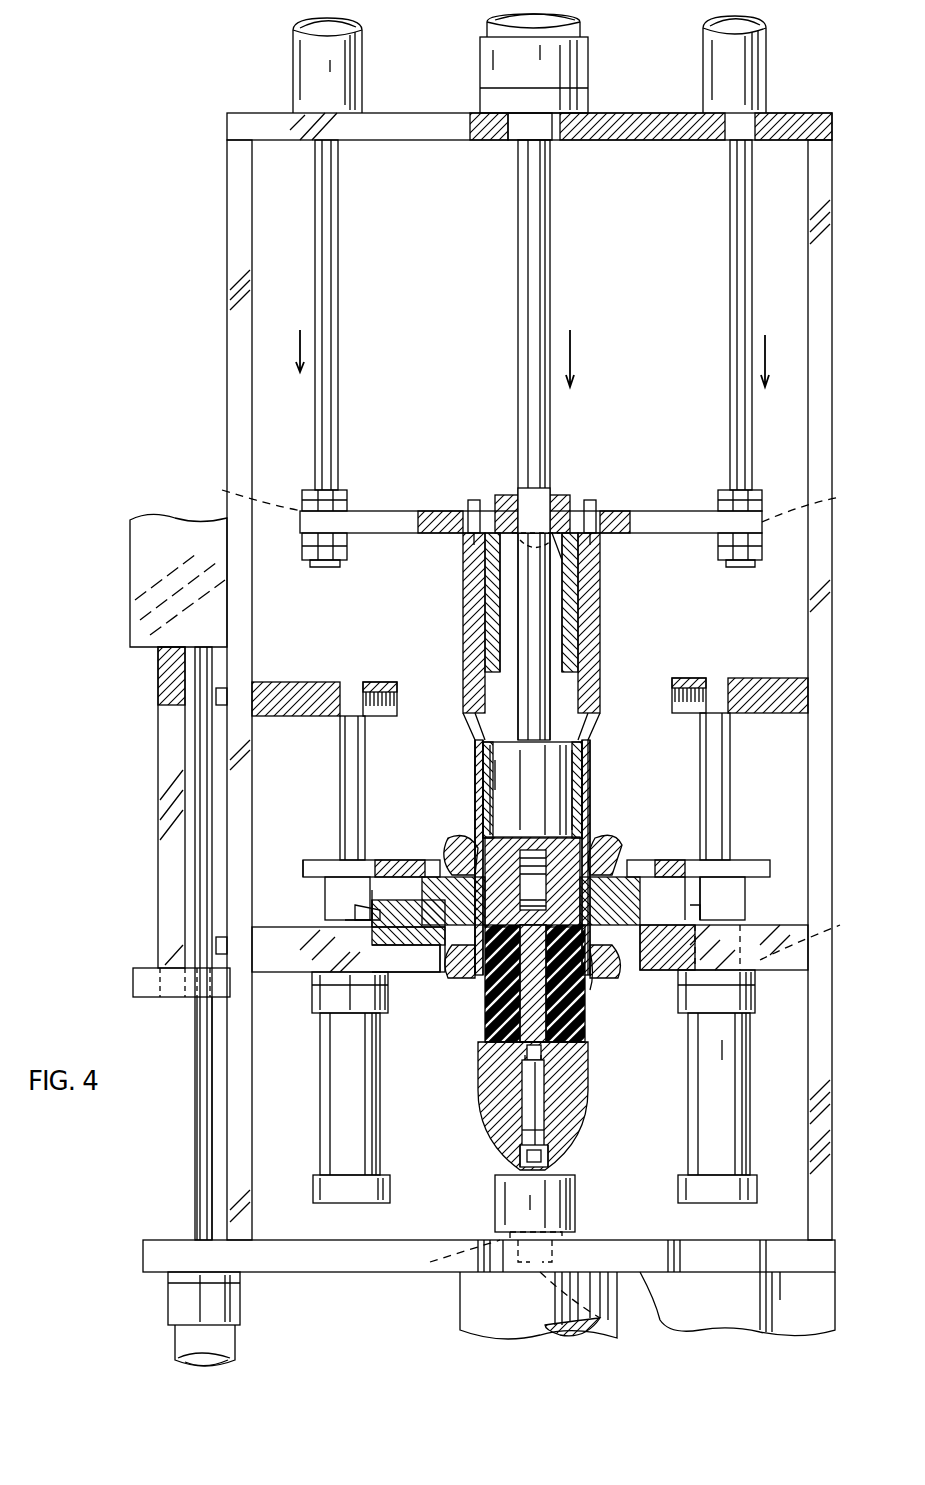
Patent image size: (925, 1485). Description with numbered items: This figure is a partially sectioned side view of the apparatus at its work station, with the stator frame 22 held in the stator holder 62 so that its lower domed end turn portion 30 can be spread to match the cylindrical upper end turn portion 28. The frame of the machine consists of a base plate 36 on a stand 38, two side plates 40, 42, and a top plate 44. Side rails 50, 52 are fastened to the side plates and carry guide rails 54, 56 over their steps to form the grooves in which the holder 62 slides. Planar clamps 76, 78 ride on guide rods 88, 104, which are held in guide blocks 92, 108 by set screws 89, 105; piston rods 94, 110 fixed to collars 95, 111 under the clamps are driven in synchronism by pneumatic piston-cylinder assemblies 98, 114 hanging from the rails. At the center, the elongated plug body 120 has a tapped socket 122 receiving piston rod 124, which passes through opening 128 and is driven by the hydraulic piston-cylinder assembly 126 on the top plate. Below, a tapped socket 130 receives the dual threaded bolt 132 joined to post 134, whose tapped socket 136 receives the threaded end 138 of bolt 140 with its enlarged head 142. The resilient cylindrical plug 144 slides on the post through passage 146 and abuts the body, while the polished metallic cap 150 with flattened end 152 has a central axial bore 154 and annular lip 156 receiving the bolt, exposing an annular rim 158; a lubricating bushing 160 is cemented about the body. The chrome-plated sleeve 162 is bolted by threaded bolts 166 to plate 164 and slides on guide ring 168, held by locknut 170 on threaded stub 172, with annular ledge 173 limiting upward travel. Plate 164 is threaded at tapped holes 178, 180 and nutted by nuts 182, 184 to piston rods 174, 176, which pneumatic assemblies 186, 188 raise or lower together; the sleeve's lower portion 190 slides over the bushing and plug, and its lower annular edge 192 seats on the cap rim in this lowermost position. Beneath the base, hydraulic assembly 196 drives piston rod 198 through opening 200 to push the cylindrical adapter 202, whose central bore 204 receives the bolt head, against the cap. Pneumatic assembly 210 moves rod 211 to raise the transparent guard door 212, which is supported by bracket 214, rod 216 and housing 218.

The square frame 22 is at (645, 880).
The end turn portion 28 is at (460, 838).
The end turn portion 30 is at (470, 975).
The base plate 36 is at (150, 1240).
The stand 38 is at (745, 1325).
The side plate 40 is at (228, 375).
The side plate 42 is at (822, 380).
The top plate 44 is at (660, 140).
The side rail 50 is at (300, 972).
The side rail 52 is at (780, 975).
The guide rail 54 is at (345, 880).
The guide rail 56 is at (698, 870).
The stator holder 62 is at (370, 1000).
The planar clamp 76 is at (410, 860).
The planar clamp 78 is at (760, 860).
The guide rod 88 is at (340, 745).
The set screw 89 is at (398, 690).
The guide block 92 is at (280, 682).
The piston rod 94 is at (340, 920).
The collar 95 is at (325, 890).
The piston-cylinder assembly 98 is at (328, 1145).
The guide rod 104 is at (725, 770).
The set screw 105 is at (672, 688).
The guide block 108 is at (782, 678).
The piston rod 110 is at (826, 932).
The collar 111 is at (740, 895).
The piston-cylinder assembly 114 is at (735, 1078).
The plug body 120 is at (478, 755).
The tapped socket 122 is at (468, 580).
The piston rod 124 is at (518, 340).
The piston-cylinder assembly 126 is at (575, 76).
The opening 128 is at (552, 140).
The tapped socket 130 is at (490, 840).
The dual threaded bolt 132 is at (535, 850).
The post 134 is at (488, 1015).
The tapped socket 136 is at (545, 1052).
The threaded end 138 is at (525, 1058).
The bolt 140 is at (546, 1110).
The enlarged head 142 is at (546, 1140).
The resilient cylindrical plug 144 is at (546, 1025).
The cylindrical passage 146 is at (616, 979).
The metallic cap 150 is at (480, 1112).
The flattened end 152 is at (548, 1160).
The central axial bore 154 is at (545, 1095).
The annular lip 156 is at (518, 1152).
The annular rim 158 is at (488, 1042).
The lubricating bushing 160 is at (580, 758).
The sleeve 162 is at (463, 633).
The plate 164 is at (405, 511).
The threaded bolts 166 is at (470, 498).
The guide ring 168 is at (578, 560).
The locknut 170 is at (570, 490).
The threaded stub 172 is at (552, 495).
The annular ledge 173 is at (572, 650).
The piston rod 174 is at (338, 250).
The piston rod 176 is at (740, 248).
The tapped hole 178 is at (238, 493).
The tapped hole 180 is at (824, 501).
The nut 182 is at (312, 560).
The nut 184 is at (760, 560).
The piston-cylinder assembly 186 is at (302, 72).
The piston-cylinder assembly 188 is at (760, 66).
The lower portion 190 is at (470, 760).
The lower annular edge 192 is at (725, 1040).
The piston-cylinder assembly 196 is at (472, 1312).
The piston rod 198 is at (455, 1272).
The opening 200 is at (598, 1313).
The cylindrical adapter 202 is at (578, 1222).
The central bore 204 is at (498, 1220).
The piston-cylinder assembly 210 is at (240, 1318).
The rod 211 is at (197, 1152).
The transparent guard door 212 is at (195, 838).
The bracket 214 is at (133, 980).
The rod 216 is at (158, 780).
The housing 218 is at (130, 582).